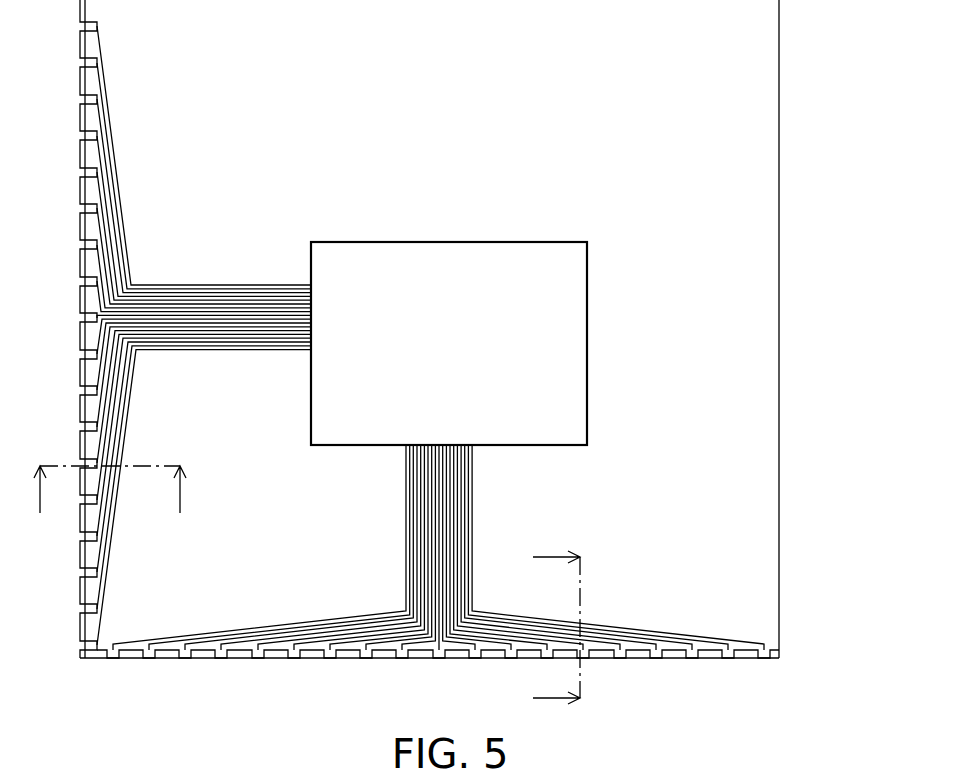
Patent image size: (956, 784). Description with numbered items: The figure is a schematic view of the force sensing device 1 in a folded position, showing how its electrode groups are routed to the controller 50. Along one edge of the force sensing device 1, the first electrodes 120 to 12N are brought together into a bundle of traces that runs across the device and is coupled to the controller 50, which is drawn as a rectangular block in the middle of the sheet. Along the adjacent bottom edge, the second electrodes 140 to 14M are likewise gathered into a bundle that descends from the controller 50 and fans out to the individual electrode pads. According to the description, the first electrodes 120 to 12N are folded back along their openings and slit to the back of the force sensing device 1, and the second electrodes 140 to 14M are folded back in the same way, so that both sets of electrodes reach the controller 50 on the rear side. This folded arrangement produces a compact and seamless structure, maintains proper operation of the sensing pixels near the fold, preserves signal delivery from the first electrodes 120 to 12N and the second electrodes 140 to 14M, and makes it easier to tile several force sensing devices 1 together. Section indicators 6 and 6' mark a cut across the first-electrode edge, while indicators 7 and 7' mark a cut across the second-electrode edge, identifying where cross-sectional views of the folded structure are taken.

The force sensing device 1 is at (783, 316).
The controller 50 is at (450, 241).
The first electrode 12N is at (118, 130).
The second electrode 14M is at (620, 622).
The first electrode 120 is at (113, 565).
The second electrode 140 is at (304, 622).
The section line 6-6' 6 is at (104, 507).
The section line 6- 6' is at (183, 507).
The section line 7-7' 7 is at (541, 700).
The section line 7- 7' is at (541, 620).